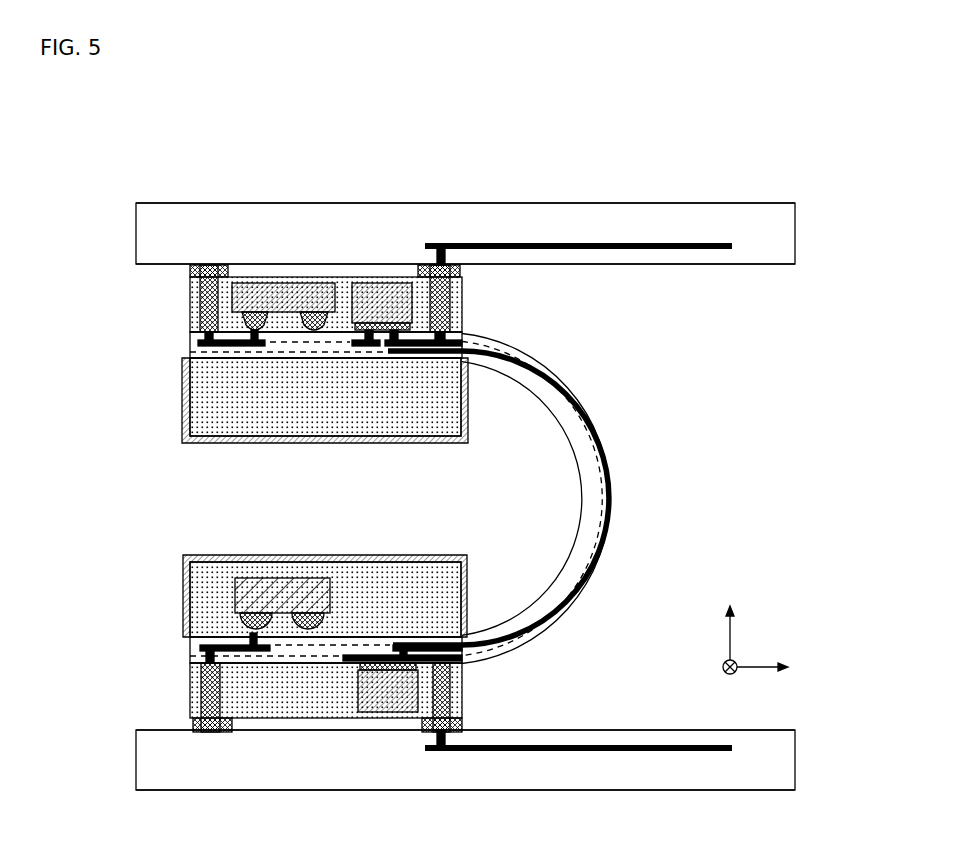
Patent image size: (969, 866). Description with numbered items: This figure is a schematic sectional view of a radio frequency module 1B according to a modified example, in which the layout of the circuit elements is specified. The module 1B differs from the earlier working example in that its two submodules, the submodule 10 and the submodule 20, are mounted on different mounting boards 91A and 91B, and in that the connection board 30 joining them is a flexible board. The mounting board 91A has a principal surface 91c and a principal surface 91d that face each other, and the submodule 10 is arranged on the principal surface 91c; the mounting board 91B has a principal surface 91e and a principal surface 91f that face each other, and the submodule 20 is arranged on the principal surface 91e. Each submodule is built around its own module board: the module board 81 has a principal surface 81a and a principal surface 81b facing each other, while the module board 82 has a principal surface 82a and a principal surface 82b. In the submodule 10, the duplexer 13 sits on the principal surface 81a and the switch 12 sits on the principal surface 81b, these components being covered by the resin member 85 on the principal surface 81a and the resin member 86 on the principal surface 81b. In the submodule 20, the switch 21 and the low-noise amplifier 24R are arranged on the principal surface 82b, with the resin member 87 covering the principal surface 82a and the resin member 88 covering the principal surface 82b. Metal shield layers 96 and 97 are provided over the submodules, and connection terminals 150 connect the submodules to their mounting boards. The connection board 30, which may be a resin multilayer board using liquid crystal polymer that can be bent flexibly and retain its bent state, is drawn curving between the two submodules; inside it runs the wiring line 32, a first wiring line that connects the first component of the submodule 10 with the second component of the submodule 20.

The radio frequency module 1B is at (706, 105).
The submodule 10 is at (97, 550).
The submodule 20 is at (97, 270).
The switch 12 is at (381, 705).
The duplexer 13 is at (262, 596).
The switch 21 is at (377, 293).
The low-noise amplifier 24R is at (279, 292).
The connection board 30 is at (606, 456).
The wiring line 32 is at (556, 409).
The module board 81 is at (192, 653).
The principal surface 81a is at (196, 628).
The principal surface 81b is at (196, 672).
The module board 82 is at (192, 347).
The principal surface 82a is at (203, 360).
The principal surface 82b is at (196, 330).
The resin member 85 is at (206, 575).
The resin member 86 is at (226, 690).
The resin member 87 is at (207, 418).
The resin member 88 is at (230, 320).
The mounting board 91A is at (728, 782).
The mounting board 91B is at (728, 258).
The principal surface 91c is at (583, 730).
The principal surface 91d is at (583, 790).
The principal surface 91e is at (582, 264).
The principal surface 91f is at (582, 203).
The metal shield layer 96 is at (312, 557).
The metal shield layer 97 is at (333, 443).
The connection terminal 150 is at (209, 290).